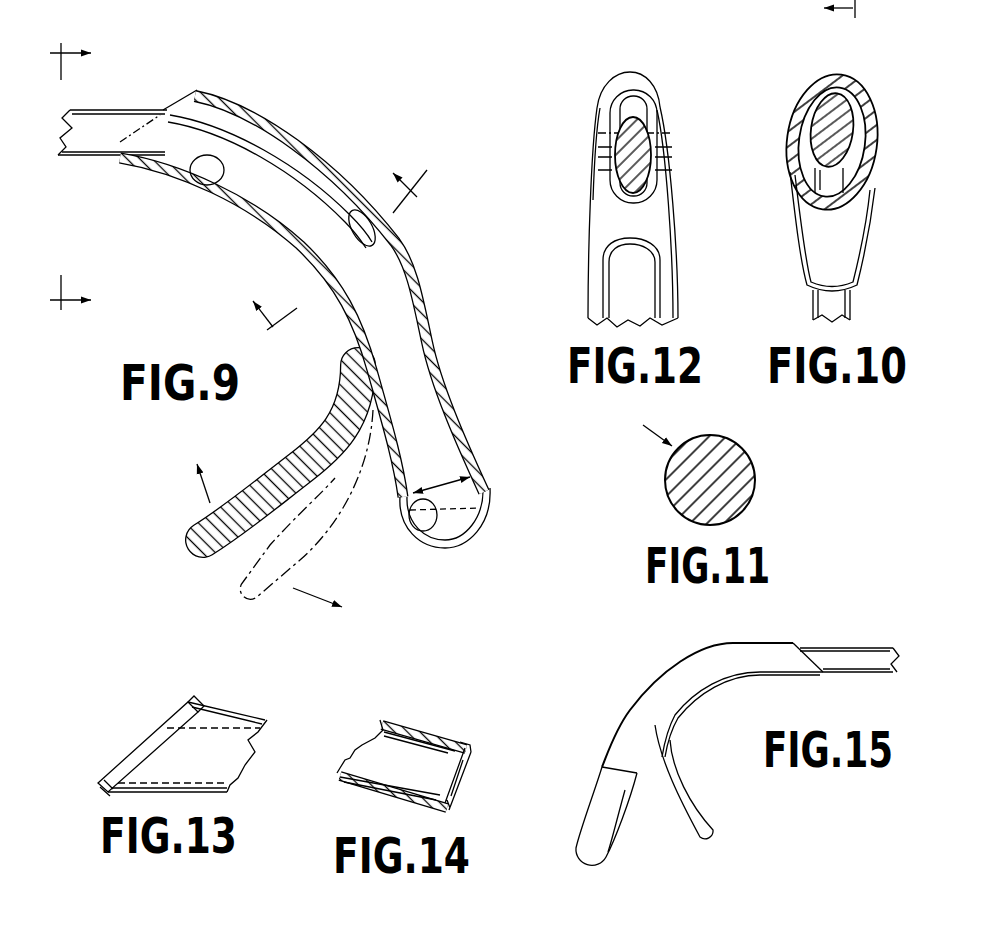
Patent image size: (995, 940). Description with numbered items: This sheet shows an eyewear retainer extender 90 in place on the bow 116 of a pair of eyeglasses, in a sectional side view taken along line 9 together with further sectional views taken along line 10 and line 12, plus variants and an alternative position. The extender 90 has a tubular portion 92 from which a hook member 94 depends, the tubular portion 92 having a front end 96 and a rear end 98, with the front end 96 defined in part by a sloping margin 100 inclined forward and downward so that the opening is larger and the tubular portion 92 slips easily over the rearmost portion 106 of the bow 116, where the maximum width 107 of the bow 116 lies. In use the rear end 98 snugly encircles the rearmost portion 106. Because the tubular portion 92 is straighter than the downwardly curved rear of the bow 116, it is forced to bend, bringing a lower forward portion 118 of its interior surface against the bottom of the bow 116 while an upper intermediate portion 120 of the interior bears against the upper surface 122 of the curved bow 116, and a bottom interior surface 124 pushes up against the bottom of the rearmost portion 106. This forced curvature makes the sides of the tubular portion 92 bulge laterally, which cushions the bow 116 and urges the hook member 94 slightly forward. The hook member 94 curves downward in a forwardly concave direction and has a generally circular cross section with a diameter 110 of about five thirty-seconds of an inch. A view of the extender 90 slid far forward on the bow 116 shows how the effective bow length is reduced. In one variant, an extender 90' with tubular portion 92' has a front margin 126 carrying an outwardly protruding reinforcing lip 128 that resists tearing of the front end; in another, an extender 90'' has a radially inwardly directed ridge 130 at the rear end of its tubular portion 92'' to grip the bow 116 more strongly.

In FIG. 10, the section line 9— 9 is at (849, 18).
In FIG. 9, the section line 10— 10 is at (353, 264).
In FIG. 9, the section line 12— 12 is at (70, 178).
In FIG. 9, the extender 90 is at (359, 294).
In FIG. 15, the extender 90 is at (712, 702).
In FIG. 10, the tubular portion 92 is at (844, 141).
In FIG. 11, the hook member 94 is at (753, 462).
In FIG. 15, the hook member 94 is at (707, 818).
In FIG. 9, the front end 96 is at (122, 160).
In FIG. 9, the rear end 98 is at (488, 494).
In FIG. 9, the sloping margin 100 is at (173, 110).
In FIG. 9, the rearmost portion 106 is at (473, 541).
In FIG. 15, the rearmost portion 106 is at (590, 867).
In FIG. 9, the maximum width 107 is at (437, 493).
In FIG. 11, the diameter 110 is at (749, 514).
In FIG. 9, the bow 116 is at (125, 108).
In FIG. 15, the bow 116 is at (872, 648).
In FIG. 9, the lower forward portion 118 is at (220, 186).
In FIG. 12, the lower forward portion 118 is at (663, 143).
In FIG. 9, the upper intermediate portion 120 is at (343, 213).
In FIG. 9, the upper surface 122 is at (390, 250).
In FIG. 9, the bottom interior surface 124 is at (433, 538).
In FIG. 13, the front margin 126 is at (145, 742).
In FIG. 13, the reinforcing lip 128 is at (201, 712).
In FIG. 14, the ridge 130 is at (461, 783).
In FIG. 13, the extender 90' is at (210, 747).
In FIG. 13, the tubular portion 92' is at (192, 803).
In FIG. 14, the extender 90'' is at (385, 776).
In FIG. 14, the tubular portion 92'' is at (424, 712).